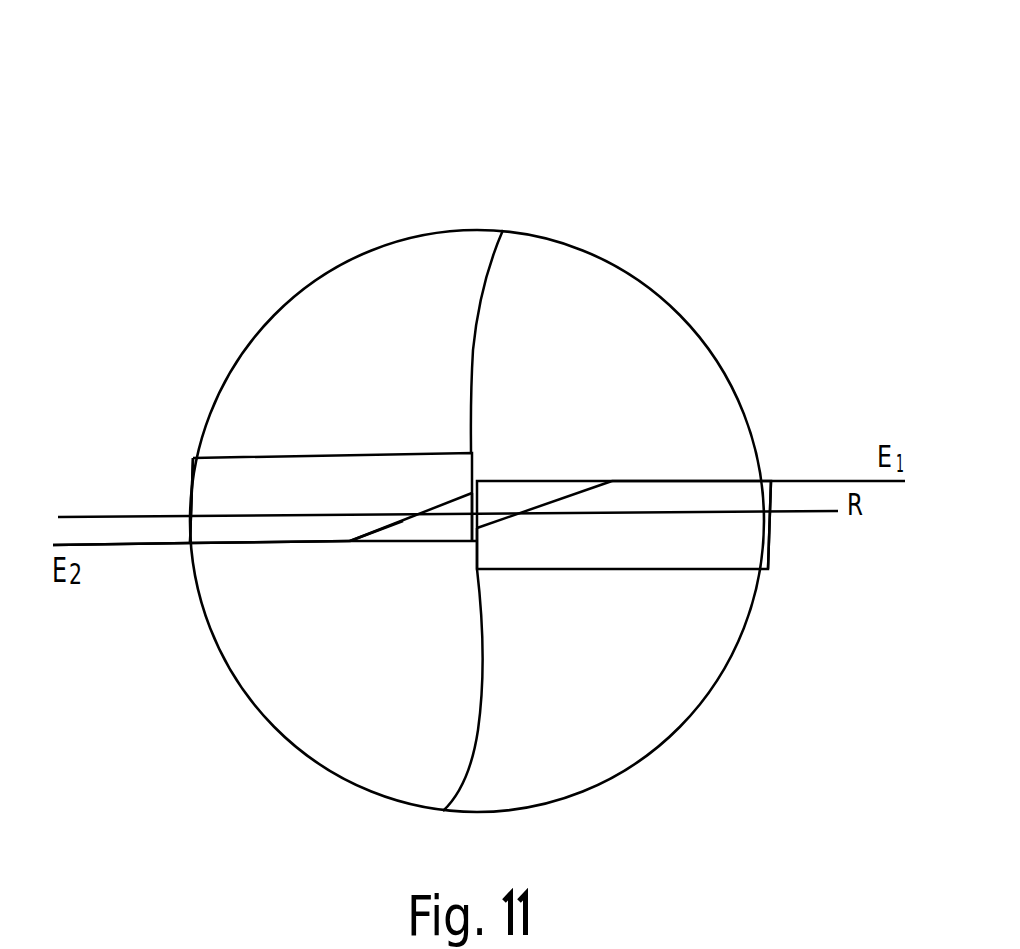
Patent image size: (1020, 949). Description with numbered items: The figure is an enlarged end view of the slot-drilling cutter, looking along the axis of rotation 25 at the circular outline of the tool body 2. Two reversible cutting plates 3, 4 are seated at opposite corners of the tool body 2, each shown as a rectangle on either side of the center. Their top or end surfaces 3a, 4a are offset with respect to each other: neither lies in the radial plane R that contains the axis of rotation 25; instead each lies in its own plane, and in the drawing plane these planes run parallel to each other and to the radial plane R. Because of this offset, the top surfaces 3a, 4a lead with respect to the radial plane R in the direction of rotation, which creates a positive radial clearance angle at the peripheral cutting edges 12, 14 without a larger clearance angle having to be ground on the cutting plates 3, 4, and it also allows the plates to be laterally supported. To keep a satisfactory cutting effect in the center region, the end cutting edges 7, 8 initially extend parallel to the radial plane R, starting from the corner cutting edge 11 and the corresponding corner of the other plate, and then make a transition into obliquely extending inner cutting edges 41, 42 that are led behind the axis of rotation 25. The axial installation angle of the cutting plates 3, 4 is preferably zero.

The tool body 2 is at (523, 268).
The cutting plate 3 is at (710, 555).
The top or end surface 3a is at (608, 474).
The cutting plate 4 is at (240, 480).
The top or end surface 4a is at (333, 552).
The end cutting edge 7 is at (670, 482).
The end cutting edge 8 is at (292, 542).
The corner cutting edge 11 is at (205, 554).
The peripheral cutting edge 12 is at (740, 528).
The peripheral cutting edge 14 is at (190, 543).
The axis of rotation 25 is at (462, 512).
The inner cutting edge 41 is at (508, 518).
The inner cutting edge 42 is at (403, 521).